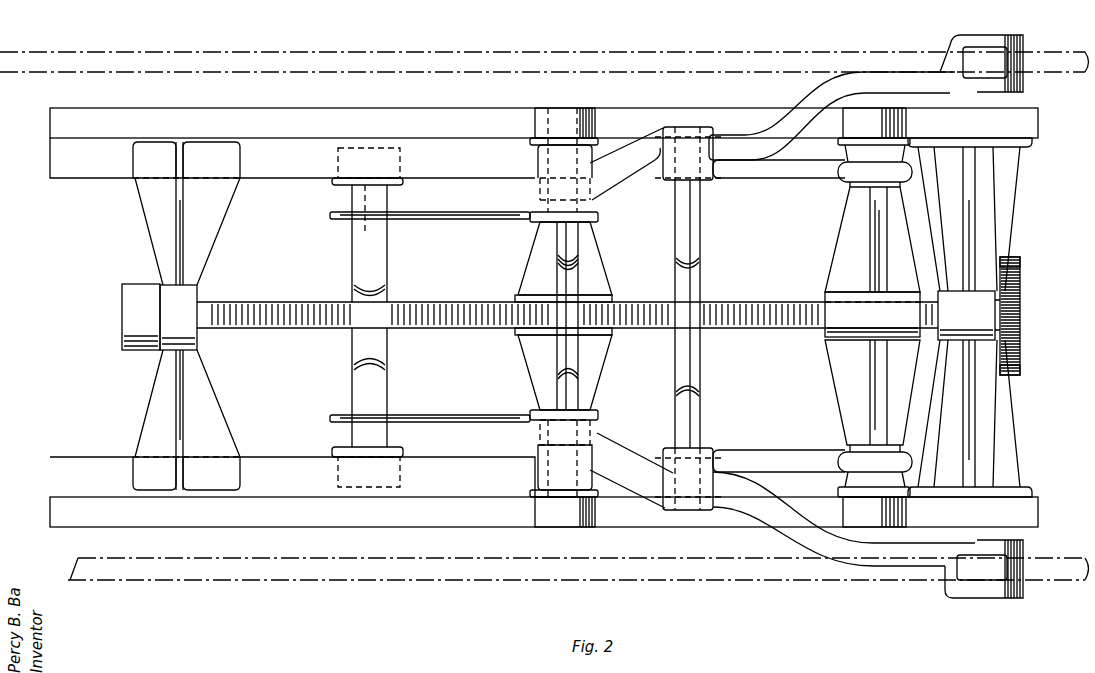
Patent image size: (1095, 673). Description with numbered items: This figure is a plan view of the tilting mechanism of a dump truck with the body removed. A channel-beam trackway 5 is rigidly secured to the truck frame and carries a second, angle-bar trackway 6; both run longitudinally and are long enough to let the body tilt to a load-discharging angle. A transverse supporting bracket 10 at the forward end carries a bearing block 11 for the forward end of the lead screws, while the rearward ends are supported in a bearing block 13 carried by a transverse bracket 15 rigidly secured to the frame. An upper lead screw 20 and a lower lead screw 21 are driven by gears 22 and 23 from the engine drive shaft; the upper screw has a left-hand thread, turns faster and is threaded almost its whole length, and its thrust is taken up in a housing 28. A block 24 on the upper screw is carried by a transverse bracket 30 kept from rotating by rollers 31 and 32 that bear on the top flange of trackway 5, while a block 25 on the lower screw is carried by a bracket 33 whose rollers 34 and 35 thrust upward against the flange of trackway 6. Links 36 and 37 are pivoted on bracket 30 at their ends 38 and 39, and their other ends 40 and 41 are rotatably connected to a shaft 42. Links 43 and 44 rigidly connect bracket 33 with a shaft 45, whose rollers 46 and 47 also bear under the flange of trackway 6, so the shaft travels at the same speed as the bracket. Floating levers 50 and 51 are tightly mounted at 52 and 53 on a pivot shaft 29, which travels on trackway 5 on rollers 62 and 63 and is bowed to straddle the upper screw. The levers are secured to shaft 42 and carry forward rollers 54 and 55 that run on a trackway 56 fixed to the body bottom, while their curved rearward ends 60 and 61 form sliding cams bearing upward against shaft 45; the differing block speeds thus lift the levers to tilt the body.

The trackway 5 is at (544, 317).
The second trackway 6 is at (292, 317).
The supporting bracket 10 is at (992, 208).
The bearing block 11 is at (1013, 372).
The bearing block 13 is at (198, 297).
The bracket 15 is at (232, 214).
The upper lead screw 20 is at (797, 332).
The lower lead screw 21 is at (300, 332).
The gear 22 is at (1022, 304).
The gear 23 is at (1022, 262).
The block 24 is at (830, 297).
The block 25 is at (612, 300).
The housing 28 is at (130, 290).
The shaft 29 is at (592, 374).
The bracket 30 is at (872, 239).
The roller 31 is at (908, 125).
The roller 32 is at (908, 507).
The bracket 33 is at (588, 263).
The roller 34 is at (538, 168).
The roller 35 is at (538, 472).
The link 36 is at (802, 179).
The link 37 is at (793, 451).
The link end 38 is at (903, 186).
The link end 39 is at (905, 445).
The link end 40 is at (712, 182).
The link end 41 is at (708, 452).
The shaft 42 is at (702, 405).
The link 43 is at (464, 219).
The link 44 is at (477, 415).
The shaft 45 is at (388, 263).
The roller 46 is at (402, 165).
The roller 47 is at (338, 472).
The floating lever 50 is at (790, 102).
The floating lever 51 is at (785, 535).
The lever mounting 52 is at (537, 192).
The lever mounting 53 is at (532, 448).
The roller 54 is at (1030, 58).
The roller 55 is at (1030, 562).
The trackway 56 is at (372, 50).
The curved end 60 is at (430, 202).
The curved end 61 is at (430, 431).
The roller 62 is at (597, 117).
The roller 63 is at (597, 510).